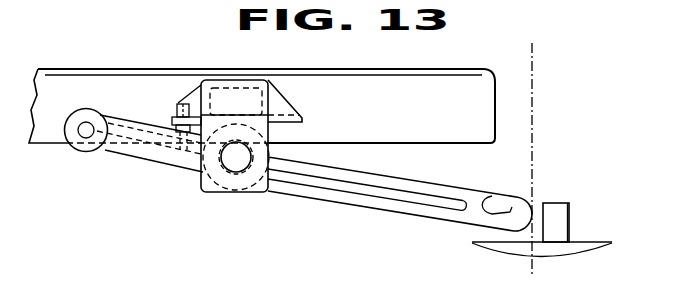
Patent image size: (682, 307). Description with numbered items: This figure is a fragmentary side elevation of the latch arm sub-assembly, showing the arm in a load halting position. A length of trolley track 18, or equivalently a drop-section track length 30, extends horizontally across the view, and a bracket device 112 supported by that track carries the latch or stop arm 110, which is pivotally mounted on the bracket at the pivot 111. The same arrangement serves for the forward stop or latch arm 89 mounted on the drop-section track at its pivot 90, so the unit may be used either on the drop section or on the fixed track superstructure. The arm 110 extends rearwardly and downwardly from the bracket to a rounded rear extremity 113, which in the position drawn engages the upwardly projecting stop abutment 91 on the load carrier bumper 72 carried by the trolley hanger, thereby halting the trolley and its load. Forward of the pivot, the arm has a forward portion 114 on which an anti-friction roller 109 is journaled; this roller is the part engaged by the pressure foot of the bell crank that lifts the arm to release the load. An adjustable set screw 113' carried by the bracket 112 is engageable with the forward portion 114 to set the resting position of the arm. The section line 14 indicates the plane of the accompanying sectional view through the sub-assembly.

The trolley tracks 18 is at (262, 93).
The track lengths 30 is at (460, 59).
The anti-friction roller 109 is at (92, 110).
The forward portion of the arm 114 is at (160, 152).
The pivot 111 is at (222, 156).
The pivot 90 is at (222, 156).
The bracket device 112 is at (230, 163).
The adjustable set screw 113' is at (174, 115).
The latch or stop arm 110 is at (400, 207).
The forward stop or latch arm 89 is at (368, 205).
The rounded rear extremity 113 is at (497, 189).
The section line 14 is at (532, 53).
The stop abutment 91 is at (570, 232).
The load carrier bumper 72 is at (596, 247).